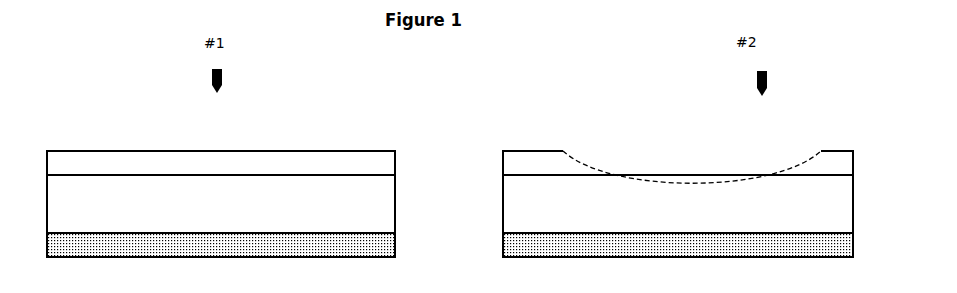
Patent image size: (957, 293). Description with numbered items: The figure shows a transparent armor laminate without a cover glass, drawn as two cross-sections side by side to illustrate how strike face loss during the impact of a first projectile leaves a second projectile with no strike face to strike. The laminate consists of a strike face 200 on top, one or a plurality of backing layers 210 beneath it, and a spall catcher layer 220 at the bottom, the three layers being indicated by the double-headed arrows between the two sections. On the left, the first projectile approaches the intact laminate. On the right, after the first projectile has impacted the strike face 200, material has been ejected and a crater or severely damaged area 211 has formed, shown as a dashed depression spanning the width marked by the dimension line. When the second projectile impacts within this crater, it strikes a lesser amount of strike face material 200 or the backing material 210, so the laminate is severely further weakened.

The strike face 200 is at (497, 155).
The backing layer 210 is at (497, 203).
The spall catcher layer 220 is at (497, 252).
The crater or severely damaged area 211 is at (821, 155).